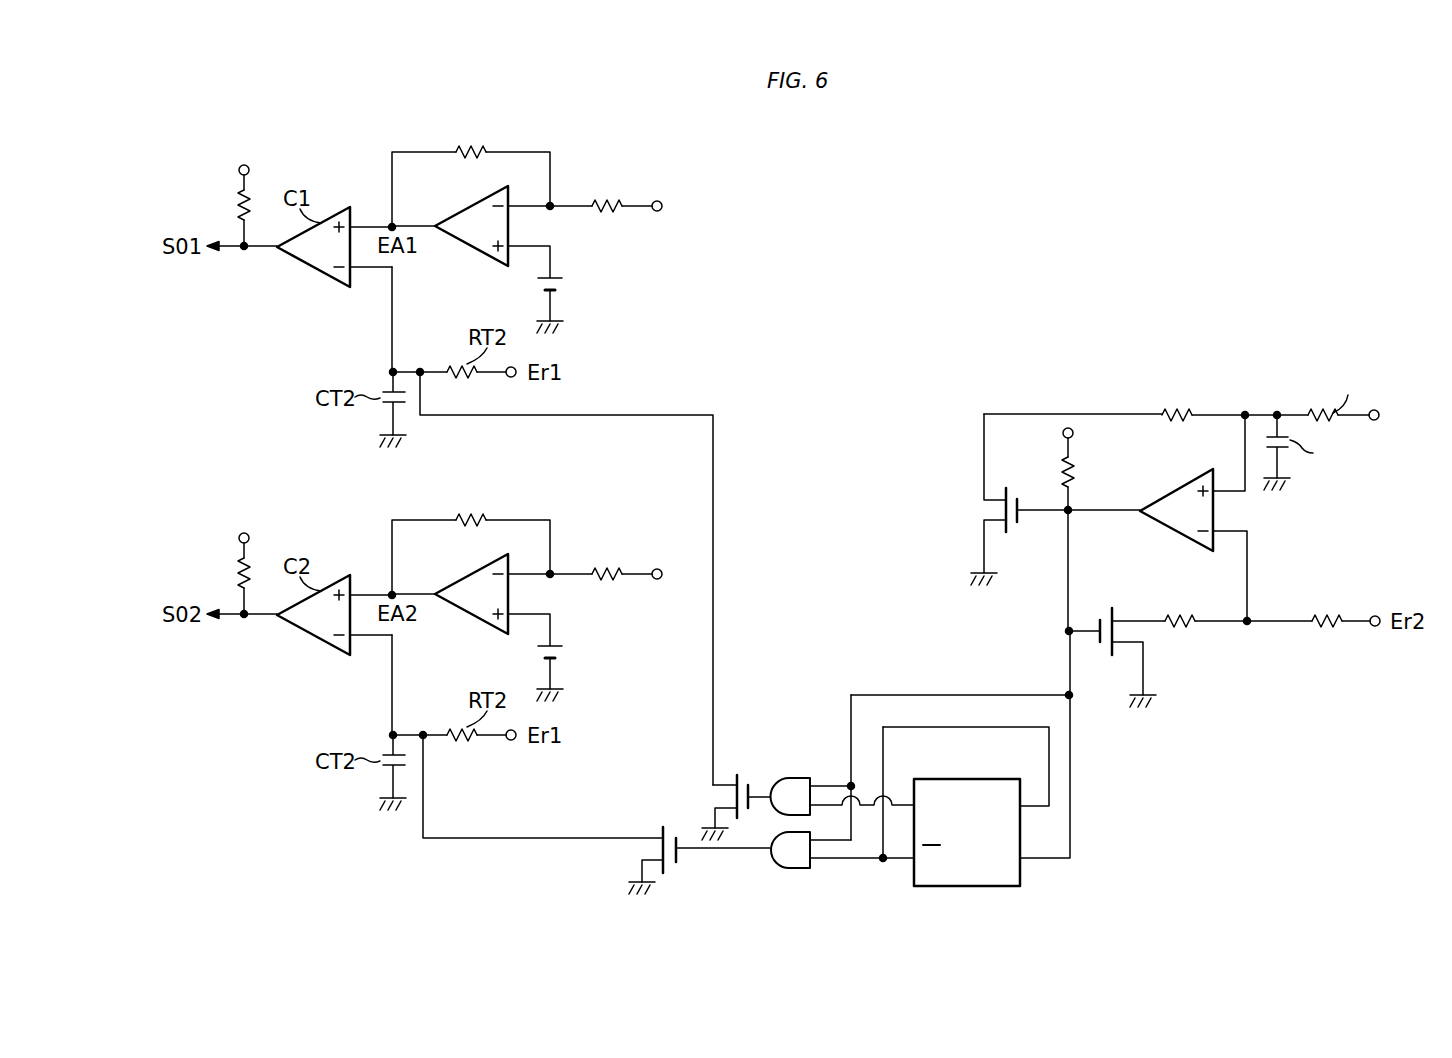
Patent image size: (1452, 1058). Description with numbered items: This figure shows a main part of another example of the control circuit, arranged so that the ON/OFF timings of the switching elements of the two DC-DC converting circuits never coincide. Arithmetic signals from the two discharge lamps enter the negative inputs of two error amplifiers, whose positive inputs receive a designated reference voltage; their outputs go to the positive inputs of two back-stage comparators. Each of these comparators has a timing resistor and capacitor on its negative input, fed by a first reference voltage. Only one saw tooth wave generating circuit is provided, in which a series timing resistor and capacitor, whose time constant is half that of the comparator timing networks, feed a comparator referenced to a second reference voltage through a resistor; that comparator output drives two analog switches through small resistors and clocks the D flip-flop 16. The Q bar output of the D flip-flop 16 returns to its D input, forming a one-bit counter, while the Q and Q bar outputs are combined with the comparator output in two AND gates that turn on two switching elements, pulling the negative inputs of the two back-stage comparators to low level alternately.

The D flip-flop circuit 16 is at (965, 779).